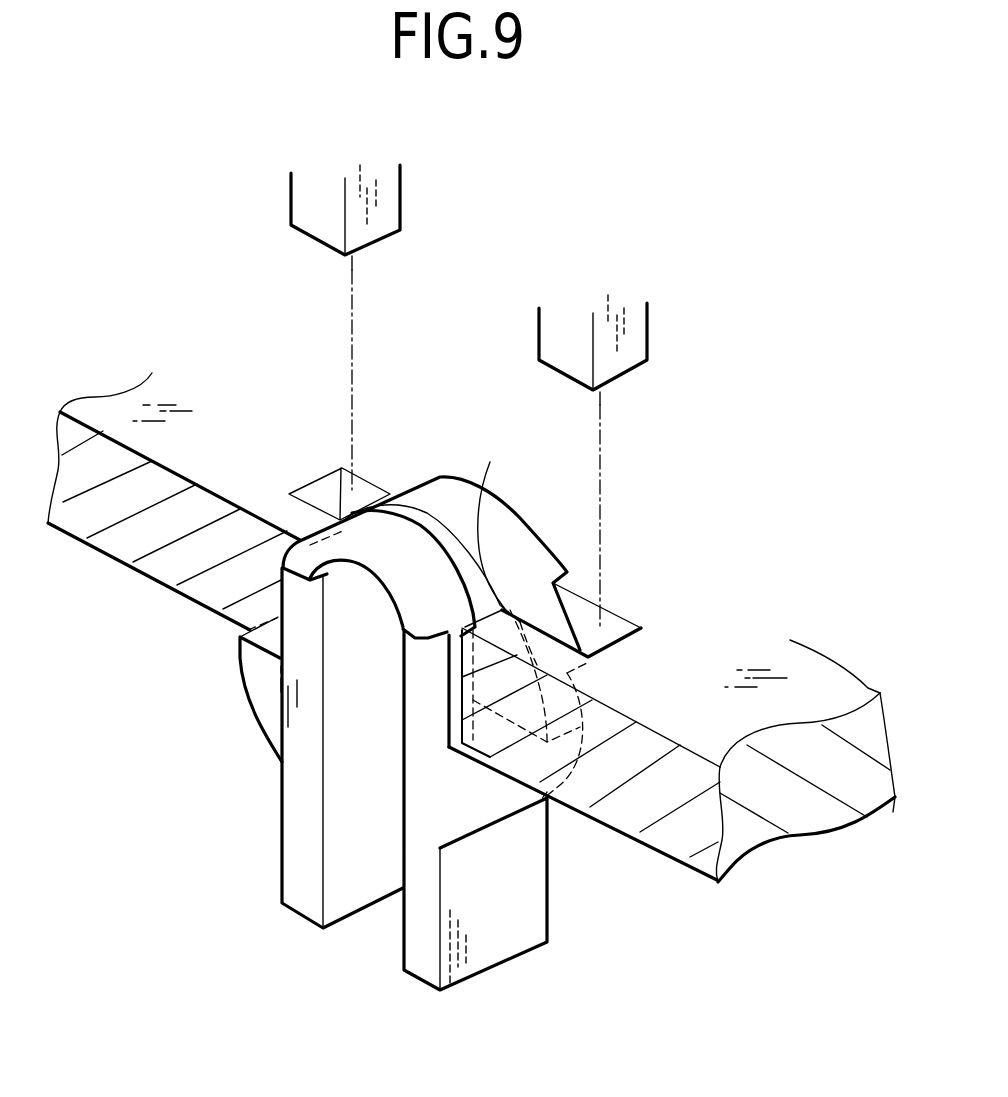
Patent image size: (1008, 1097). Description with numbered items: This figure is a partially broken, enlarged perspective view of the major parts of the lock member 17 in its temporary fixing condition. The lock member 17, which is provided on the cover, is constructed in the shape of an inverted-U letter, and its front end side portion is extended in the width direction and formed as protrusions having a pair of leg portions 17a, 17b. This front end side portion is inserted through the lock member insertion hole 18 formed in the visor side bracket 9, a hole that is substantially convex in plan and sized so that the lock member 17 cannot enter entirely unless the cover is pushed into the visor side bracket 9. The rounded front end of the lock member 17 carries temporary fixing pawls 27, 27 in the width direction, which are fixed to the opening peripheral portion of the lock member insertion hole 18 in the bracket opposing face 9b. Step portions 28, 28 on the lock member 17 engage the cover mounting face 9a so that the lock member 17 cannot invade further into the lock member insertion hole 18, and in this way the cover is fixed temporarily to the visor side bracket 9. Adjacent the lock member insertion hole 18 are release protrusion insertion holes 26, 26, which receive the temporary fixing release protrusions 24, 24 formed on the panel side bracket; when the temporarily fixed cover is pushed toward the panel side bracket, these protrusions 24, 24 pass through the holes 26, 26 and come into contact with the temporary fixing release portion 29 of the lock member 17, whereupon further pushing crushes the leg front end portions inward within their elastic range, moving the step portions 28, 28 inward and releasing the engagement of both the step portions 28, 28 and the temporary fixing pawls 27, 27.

The visor side bracket 9 is at (827, 787).
The cover mounting face 9a is at (150, 578).
The bracket opposing face 9b is at (115, 410).
The lock member 17 is at (195, 782).
The leg portion 17a is at (300, 858).
The leg portion 17b is at (423, 907).
The lock member insertion hole 18 is at (495, 456).
The temporary fixing release protrusion 24 is at (313, 192).
The release protrusion insertion hole 26 is at (317, 493).
The temporary fixing pawl 27 is at (297, 572).
The step portion 28 is at (240, 660).
The temporary fixing release portion 29 is at (587, 663).